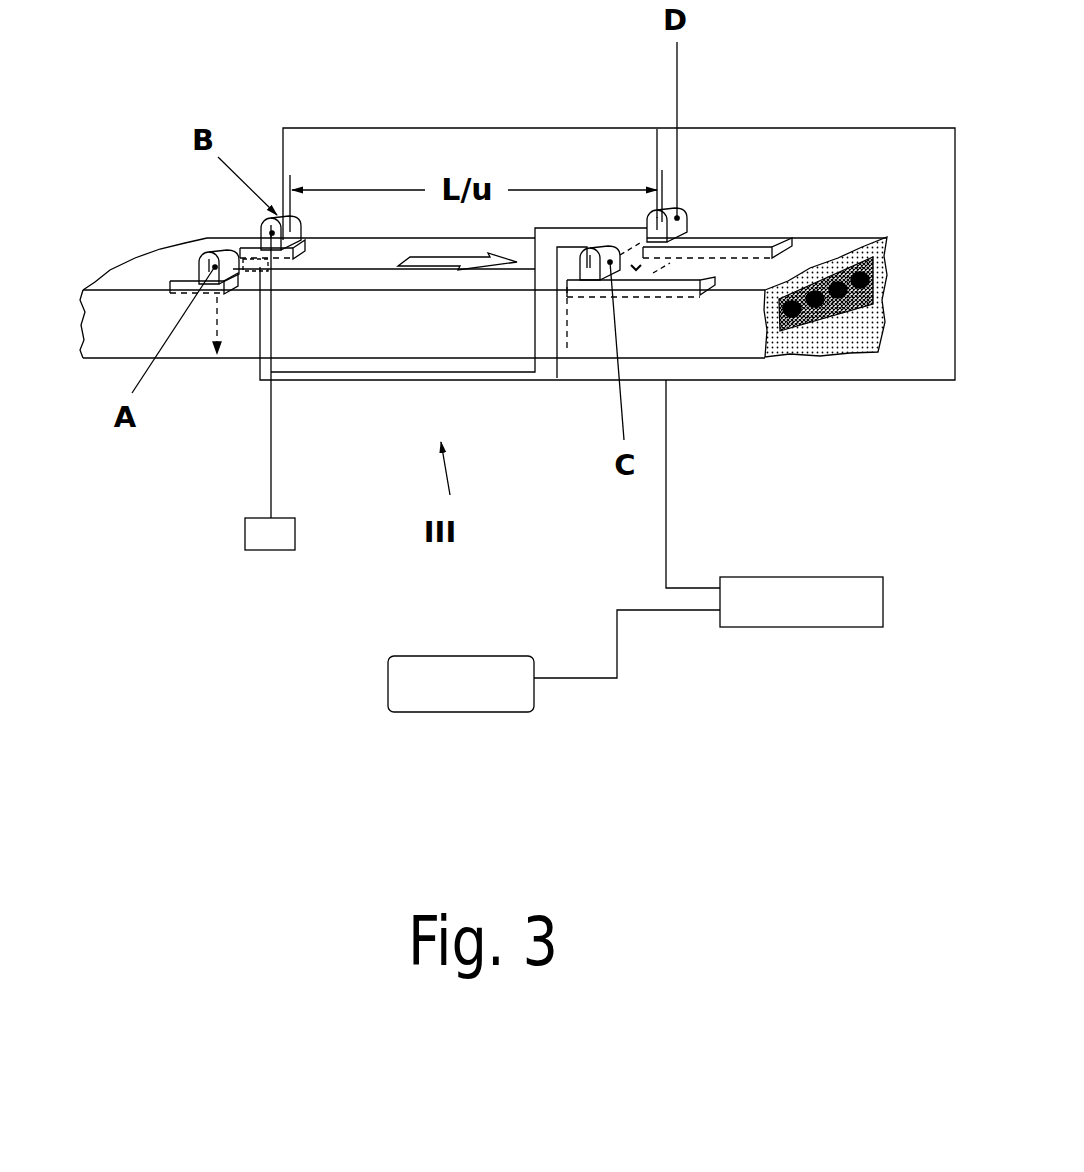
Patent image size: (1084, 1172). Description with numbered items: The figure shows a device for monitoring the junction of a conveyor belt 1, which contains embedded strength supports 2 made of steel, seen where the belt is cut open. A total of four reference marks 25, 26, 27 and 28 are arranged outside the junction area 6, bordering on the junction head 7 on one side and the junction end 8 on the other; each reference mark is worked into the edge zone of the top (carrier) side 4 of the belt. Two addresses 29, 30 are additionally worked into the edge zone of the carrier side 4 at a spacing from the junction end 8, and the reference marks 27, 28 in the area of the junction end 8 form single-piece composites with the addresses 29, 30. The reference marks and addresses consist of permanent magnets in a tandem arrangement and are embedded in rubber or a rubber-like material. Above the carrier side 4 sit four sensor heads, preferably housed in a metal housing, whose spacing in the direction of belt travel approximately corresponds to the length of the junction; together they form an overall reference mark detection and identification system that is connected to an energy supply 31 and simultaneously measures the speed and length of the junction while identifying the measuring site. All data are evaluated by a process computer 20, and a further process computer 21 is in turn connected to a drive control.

The conveyor belt 1 is at (150, 178).
The embedded strength supports 2 is at (852, 300).
The top (carrier) side 4 is at (812, 252).
The junction area 6 is at (492, 82).
The junction head 7 is at (217, 353).
The junction end 8 is at (568, 343).
The process computer 20 is at (800, 617).
The process computer 21 is at (462, 702).
The reference mark 25 is at (193, 282).
The reference mark 26 is at (255, 247).
The reference mark 27 is at (598, 284).
The reference mark 28 is at (683, 247).
The address 29 is at (660, 287).
The address 30 is at (744, 248).
The energy supply 31 is at (266, 533).